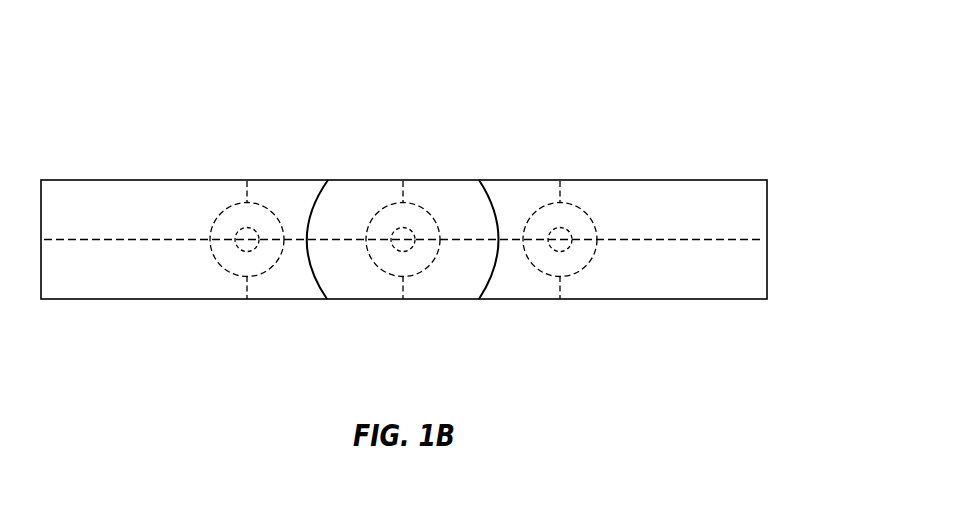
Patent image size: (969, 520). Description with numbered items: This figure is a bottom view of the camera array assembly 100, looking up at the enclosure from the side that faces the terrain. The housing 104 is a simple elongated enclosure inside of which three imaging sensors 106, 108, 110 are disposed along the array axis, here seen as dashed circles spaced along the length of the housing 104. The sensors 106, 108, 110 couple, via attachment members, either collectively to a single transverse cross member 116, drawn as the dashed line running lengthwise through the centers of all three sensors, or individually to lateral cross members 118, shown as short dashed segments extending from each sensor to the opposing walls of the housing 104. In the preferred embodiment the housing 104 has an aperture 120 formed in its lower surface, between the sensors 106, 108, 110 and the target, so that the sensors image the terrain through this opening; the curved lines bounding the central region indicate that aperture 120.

The camera array assembly 100 is at (584, 56).
The housing 104 is at (693, 180).
The imaging sensor 106 is at (237, 300).
The imaging sensor 108 is at (386, 300).
The imaging sensor 110 is at (573, 302).
The transverse cross member 116 is at (753, 240).
The lateral cross members 118 is at (245, 190).
The aperture 120 is at (490, 280).